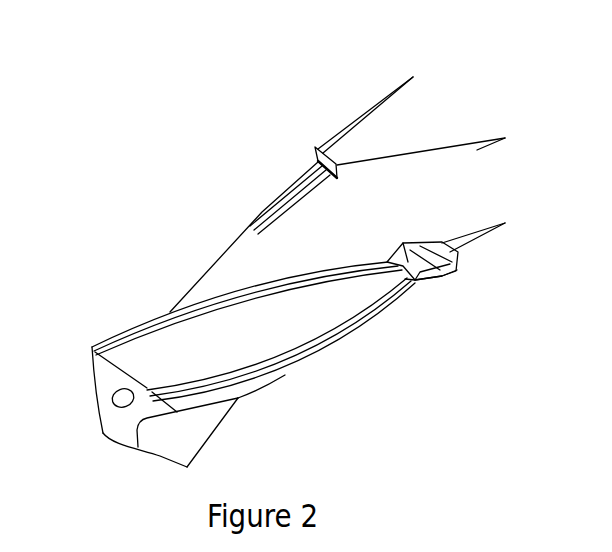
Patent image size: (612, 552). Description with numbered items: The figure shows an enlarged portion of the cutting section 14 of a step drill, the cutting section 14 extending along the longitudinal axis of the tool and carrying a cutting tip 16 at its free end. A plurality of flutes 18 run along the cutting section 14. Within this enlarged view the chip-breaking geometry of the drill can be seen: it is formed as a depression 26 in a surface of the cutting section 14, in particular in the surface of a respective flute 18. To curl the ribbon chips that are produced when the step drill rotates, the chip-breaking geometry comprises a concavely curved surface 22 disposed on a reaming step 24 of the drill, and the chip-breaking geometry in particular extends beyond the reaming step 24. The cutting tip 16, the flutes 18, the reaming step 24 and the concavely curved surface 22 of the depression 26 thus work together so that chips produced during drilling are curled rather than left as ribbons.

The cutting section 14 is at (282, 103).
The cutting tip 16 is at (107, 433).
The flute 18 is at (205, 272).
The concavely curved surface 22 is at (462, 268).
The reaming step 24 is at (312, 153).
The depression 26 is at (433, 283).